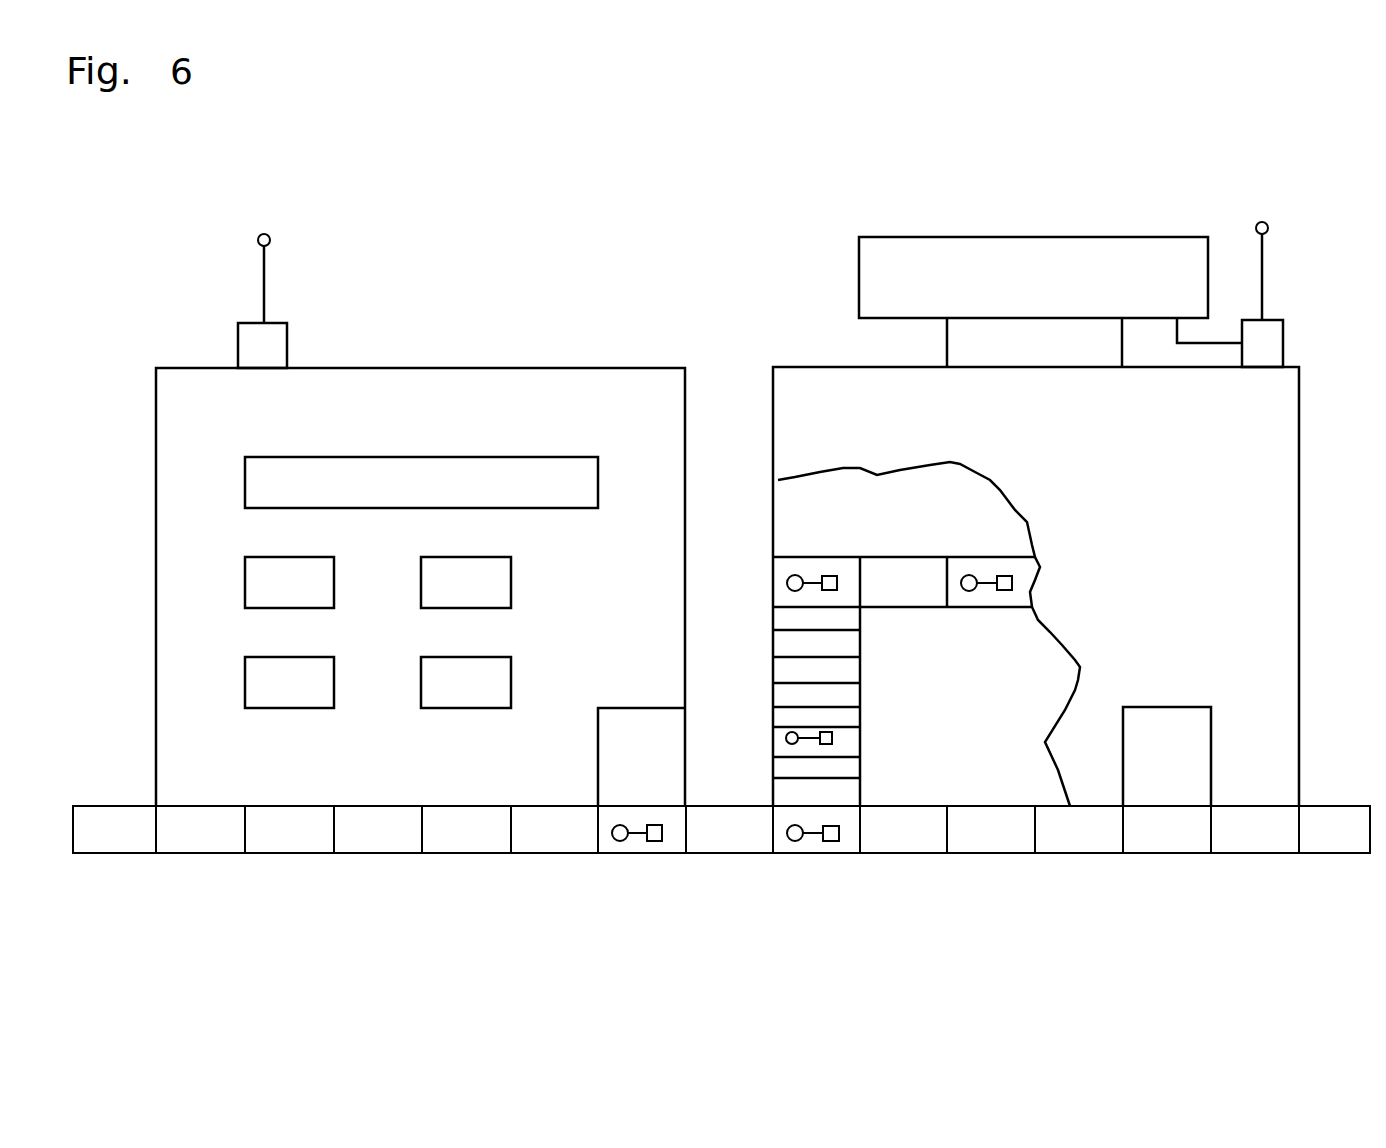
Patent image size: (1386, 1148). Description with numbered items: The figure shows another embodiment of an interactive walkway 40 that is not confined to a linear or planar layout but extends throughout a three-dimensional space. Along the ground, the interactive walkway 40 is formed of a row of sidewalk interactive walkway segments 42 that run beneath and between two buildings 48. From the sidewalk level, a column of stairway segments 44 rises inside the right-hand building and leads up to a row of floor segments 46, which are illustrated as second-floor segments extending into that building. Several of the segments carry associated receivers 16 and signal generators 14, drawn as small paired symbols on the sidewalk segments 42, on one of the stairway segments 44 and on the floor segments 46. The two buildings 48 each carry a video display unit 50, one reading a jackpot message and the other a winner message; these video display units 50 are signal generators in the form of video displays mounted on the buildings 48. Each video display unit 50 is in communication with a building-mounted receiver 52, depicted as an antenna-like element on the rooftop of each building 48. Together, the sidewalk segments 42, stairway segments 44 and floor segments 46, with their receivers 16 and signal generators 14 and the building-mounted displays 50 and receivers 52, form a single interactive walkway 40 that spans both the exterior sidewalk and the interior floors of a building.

The interactive walkway 40 is at (1095, 875).
The sidewalk interactive walkway segments 42 is at (288, 838).
The stairway segments 44 is at (845, 646).
The floor segments 46 is at (808, 573).
The buildings 48 is at (635, 367).
The video display units 50 is at (503, 450).
The building-mounted receivers 52 is at (272, 285).
The signal generators 14 is at (617, 842).
The receivers 16 is at (665, 835).